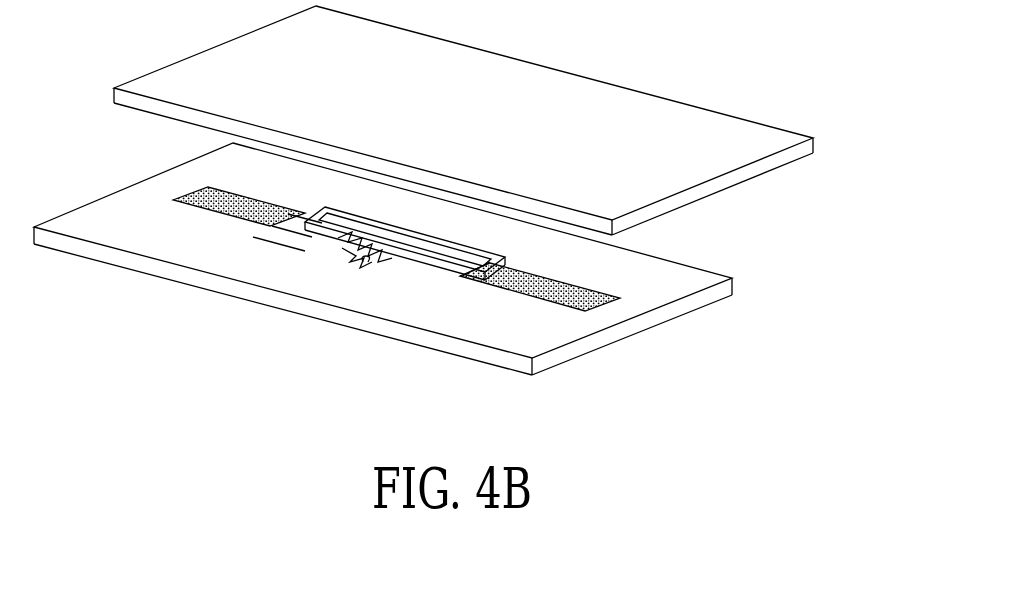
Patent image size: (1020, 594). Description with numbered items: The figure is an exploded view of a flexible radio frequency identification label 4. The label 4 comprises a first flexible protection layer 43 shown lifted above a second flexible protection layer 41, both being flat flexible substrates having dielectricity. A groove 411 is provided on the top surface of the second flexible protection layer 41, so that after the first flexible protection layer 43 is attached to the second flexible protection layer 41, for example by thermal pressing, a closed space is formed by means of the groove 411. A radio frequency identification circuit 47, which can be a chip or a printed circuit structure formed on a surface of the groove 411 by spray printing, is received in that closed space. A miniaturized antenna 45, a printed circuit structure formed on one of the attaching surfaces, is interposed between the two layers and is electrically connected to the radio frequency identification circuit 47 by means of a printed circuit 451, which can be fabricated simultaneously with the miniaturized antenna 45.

The flexible radio frequency identification label 4 is at (685, 43).
The second flexible protection layer 41 is at (558, 352).
The groove 411 is at (363, 264).
The first flexible protection layer 43 is at (742, 173).
The miniaturized antenna 45 is at (212, 213).
The printed circuit 451 is at (268, 236).
The radio frequency identification circuit 47 is at (324, 264).